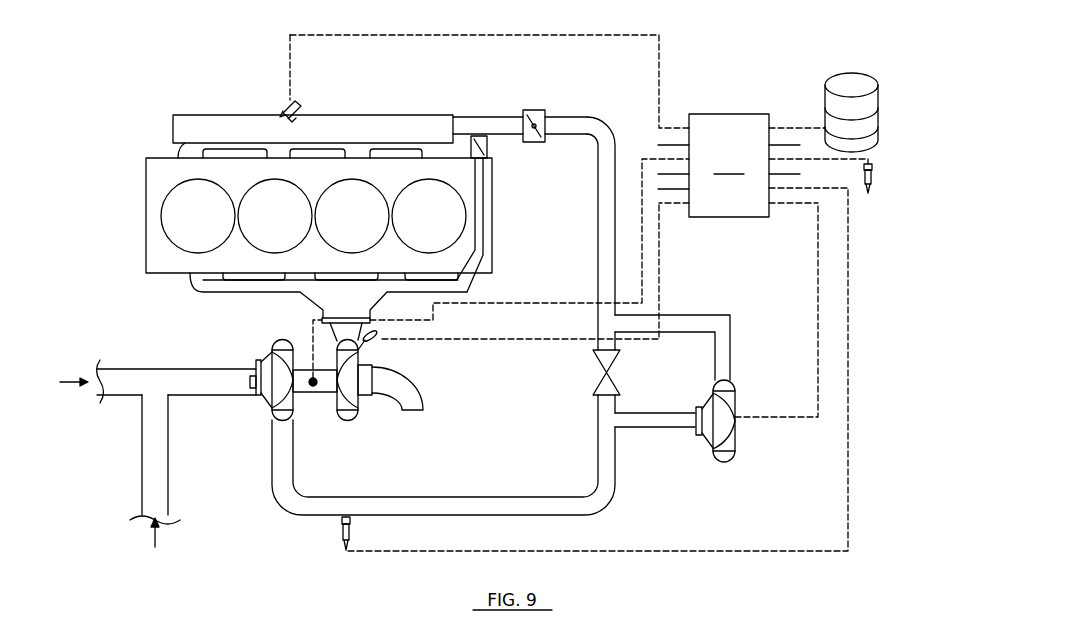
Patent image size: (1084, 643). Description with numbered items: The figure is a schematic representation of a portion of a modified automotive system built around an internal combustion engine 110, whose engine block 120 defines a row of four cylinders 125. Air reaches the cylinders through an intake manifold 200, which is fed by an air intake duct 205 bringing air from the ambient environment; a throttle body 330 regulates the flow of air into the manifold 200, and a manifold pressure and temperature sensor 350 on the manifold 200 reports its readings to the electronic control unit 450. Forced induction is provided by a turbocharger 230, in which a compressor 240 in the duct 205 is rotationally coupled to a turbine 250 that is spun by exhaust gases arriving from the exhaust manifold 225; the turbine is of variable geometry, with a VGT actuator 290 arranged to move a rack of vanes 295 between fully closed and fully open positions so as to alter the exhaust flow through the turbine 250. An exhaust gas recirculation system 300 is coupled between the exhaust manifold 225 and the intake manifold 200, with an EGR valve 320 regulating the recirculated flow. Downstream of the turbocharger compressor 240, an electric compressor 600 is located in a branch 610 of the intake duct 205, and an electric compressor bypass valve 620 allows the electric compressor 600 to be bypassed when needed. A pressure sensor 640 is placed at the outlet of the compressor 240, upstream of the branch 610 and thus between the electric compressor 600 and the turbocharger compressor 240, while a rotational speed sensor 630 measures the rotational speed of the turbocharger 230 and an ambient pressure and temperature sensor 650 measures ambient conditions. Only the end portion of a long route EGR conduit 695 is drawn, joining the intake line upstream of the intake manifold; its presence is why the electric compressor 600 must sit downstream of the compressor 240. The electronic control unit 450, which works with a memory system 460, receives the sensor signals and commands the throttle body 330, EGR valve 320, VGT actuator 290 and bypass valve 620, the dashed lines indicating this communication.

The internal combustion engine 110 is at (418, 101).
The engine block 120 is at (146, 181).
The cylinder 125 is at (168, 221).
The intake manifold 200 is at (233, 115).
The air intake duct 205 is at (132, 398).
The exhaust manifold 225 is at (233, 293).
The turbocharger 230 is at (253, 421).
The compressor 240 is at (272, 346).
The turbine 250 is at (330, 421).
The VGT actuator 290 is at (380, 346).
The rack of vanes 295 is at (345, 408).
The exhaust gas recirculation system 300 is at (490, 245).
The EGR valve 320 is at (487, 148).
The throttle body 330 is at (545, 113).
The manifold pressure and temperature sensor 350 is at (294, 108).
The electronic control unit 450 is at (579, 293).
The memory system 460 is at (825, 95).
The electric compressor 600 is at (713, 460).
The branch 610 is at (660, 430).
The electric compressor bypass valve 620 is at (594, 362).
The rotational speed sensor 630 is at (311, 377).
The pressure sensor 640 is at (343, 535).
The ambient pressure and temperature sensor 650 is at (873, 190).
The long route EGR conduit 695 is at (145, 485).